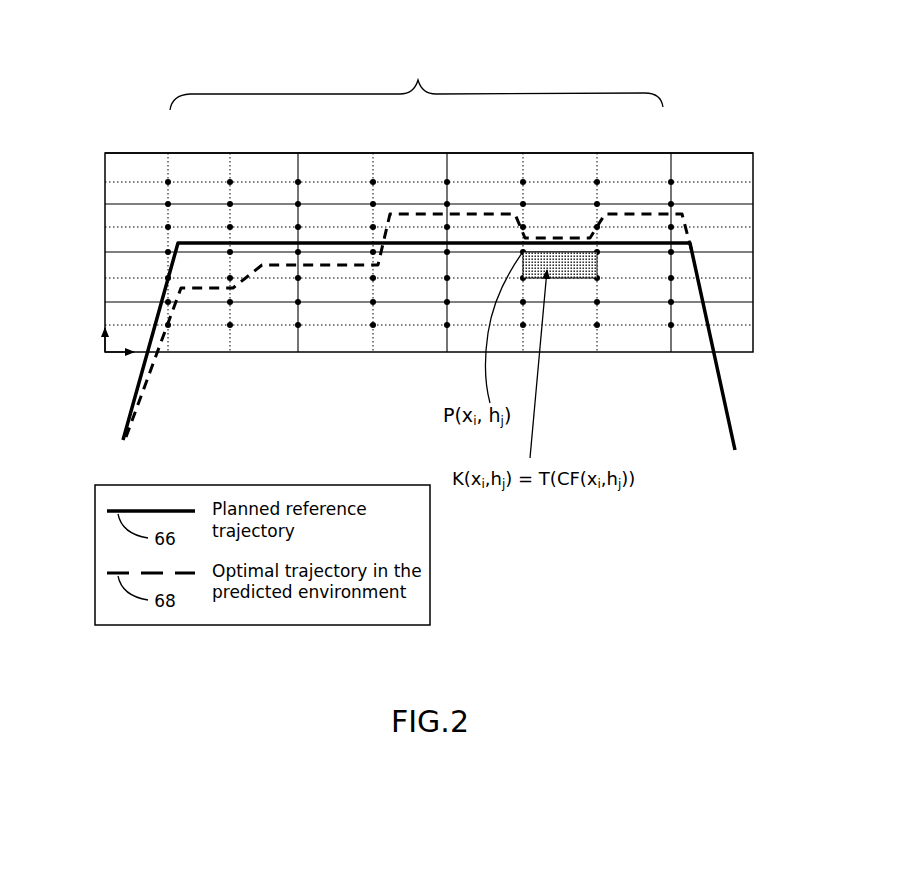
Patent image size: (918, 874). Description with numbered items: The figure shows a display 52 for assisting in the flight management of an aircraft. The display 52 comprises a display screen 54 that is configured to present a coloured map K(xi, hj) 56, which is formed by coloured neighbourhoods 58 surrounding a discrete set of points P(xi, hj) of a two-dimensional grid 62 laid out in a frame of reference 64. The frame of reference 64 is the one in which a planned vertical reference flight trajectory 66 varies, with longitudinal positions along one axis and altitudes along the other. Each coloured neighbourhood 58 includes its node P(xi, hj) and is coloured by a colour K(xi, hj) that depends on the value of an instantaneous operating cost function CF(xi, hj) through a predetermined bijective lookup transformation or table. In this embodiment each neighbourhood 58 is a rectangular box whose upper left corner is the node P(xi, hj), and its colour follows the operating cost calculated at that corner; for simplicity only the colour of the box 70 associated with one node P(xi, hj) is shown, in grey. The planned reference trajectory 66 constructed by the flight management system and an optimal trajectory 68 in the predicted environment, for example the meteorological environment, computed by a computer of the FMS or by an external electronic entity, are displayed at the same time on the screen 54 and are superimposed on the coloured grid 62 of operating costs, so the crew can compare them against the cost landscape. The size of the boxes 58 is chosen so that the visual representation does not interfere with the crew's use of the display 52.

The display 52 is at (118, 48).
The display screen 54 is at (107, 123).
The coloured map K(xi, hj) 56 is at (332, 163).
The coloured neighbourhoods 58 is at (261, 190).
The two-dimensional grid 62 is at (420, 102).
The frame of reference 64 is at (100, 362).
The planned vertical reference flight trajectory 66 is at (430, 246).
The optimal trajectory in the predicted environment 68 is at (346, 264).
The box associated with node P(xi, hj) 70 is at (586, 270).